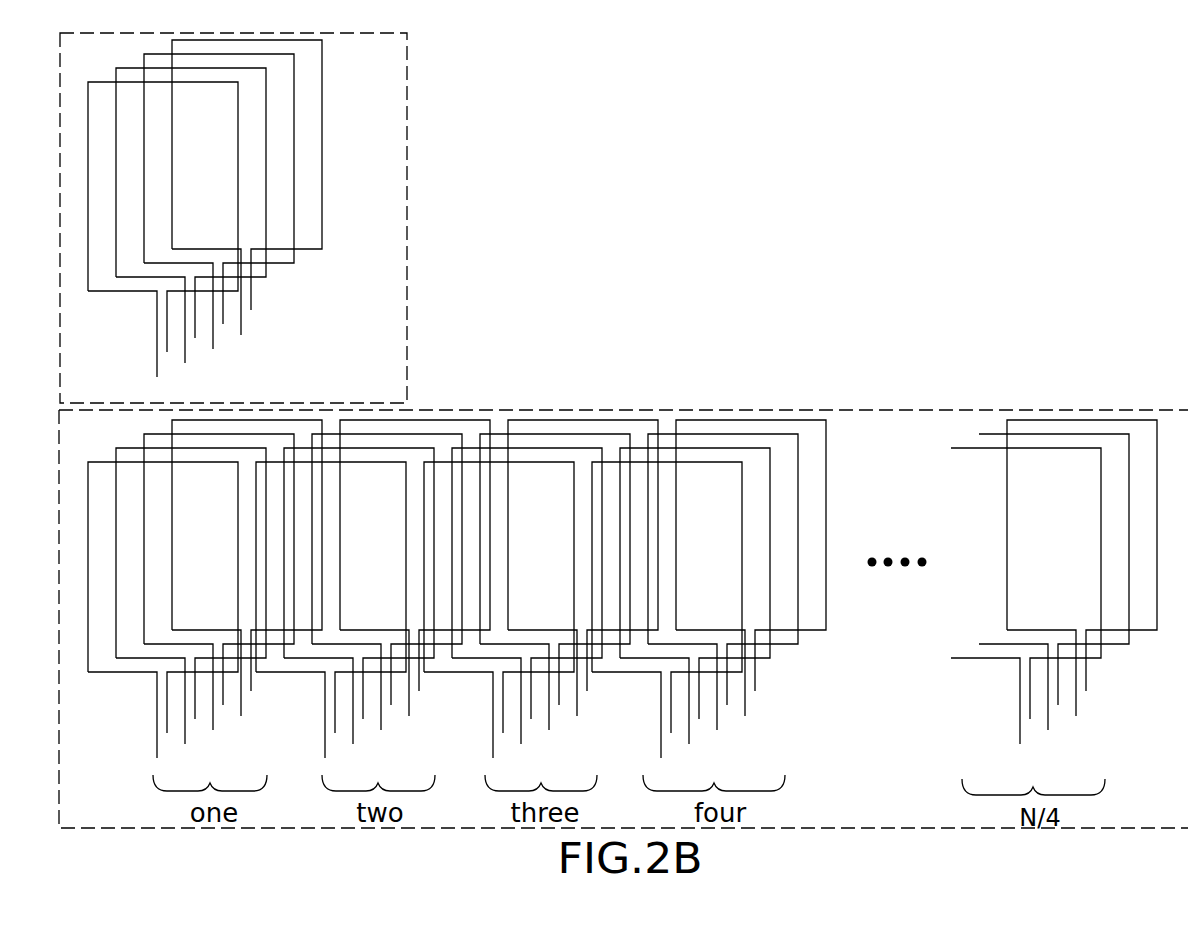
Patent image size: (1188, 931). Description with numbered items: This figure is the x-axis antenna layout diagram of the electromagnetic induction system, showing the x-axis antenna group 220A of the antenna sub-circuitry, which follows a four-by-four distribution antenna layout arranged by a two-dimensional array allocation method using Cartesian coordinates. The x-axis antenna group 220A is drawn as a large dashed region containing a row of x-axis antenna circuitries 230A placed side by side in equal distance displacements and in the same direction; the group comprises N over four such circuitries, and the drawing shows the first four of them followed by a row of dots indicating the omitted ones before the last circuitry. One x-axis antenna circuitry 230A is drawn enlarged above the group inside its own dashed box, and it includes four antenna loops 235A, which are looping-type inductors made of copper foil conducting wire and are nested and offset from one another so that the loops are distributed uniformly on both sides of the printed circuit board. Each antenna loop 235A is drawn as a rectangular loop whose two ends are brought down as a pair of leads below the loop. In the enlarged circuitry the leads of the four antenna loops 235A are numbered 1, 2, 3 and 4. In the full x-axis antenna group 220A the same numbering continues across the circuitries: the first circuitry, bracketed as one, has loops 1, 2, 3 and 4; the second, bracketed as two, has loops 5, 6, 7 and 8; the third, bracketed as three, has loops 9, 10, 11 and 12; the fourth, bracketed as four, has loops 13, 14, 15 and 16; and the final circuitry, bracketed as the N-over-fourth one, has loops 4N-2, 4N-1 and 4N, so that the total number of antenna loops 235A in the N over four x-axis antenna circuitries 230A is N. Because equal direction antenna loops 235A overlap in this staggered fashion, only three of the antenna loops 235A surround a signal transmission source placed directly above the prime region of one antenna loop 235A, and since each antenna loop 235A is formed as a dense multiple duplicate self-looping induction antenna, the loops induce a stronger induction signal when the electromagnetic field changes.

The first coil / terminal 1 is at (163, 433).
The second coil / terminal 2 is at (191, 418).
The third coil / terminal 3 is at (219, 405).
The fourth coil / terminal 4 is at (247, 532).
The coil terminal 5 is at (331, 624).
The coil terminal 6 is at (359, 609).
The coil terminal 7 is at (387, 595).
The coil terminal 8 is at (415, 581).
The coil terminal 9 is at (499, 624).
The coil terminal 10 is at (527, 609).
The coil terminal 11 is at (555, 595).
The coil terminal 12 is at (583, 581).
The coil terminal 13 is at (667, 624).
The coil terminal 14 is at (695, 609).
The coil terminal 15 is at (723, 595).
The coil terminal 16 is at (751, 580).
The coil terminal 4N-2 is at (1026, 619).
The coil terminal 4N-1 is at (1054, 600).
The coil terminal 4N is at (1082, 581).
The antenna loop 235A is at (322, 83).
The x-axis antenna circuitry 230A is at (407, 142).
The x-axis antenna group 220A is at (877, 410).